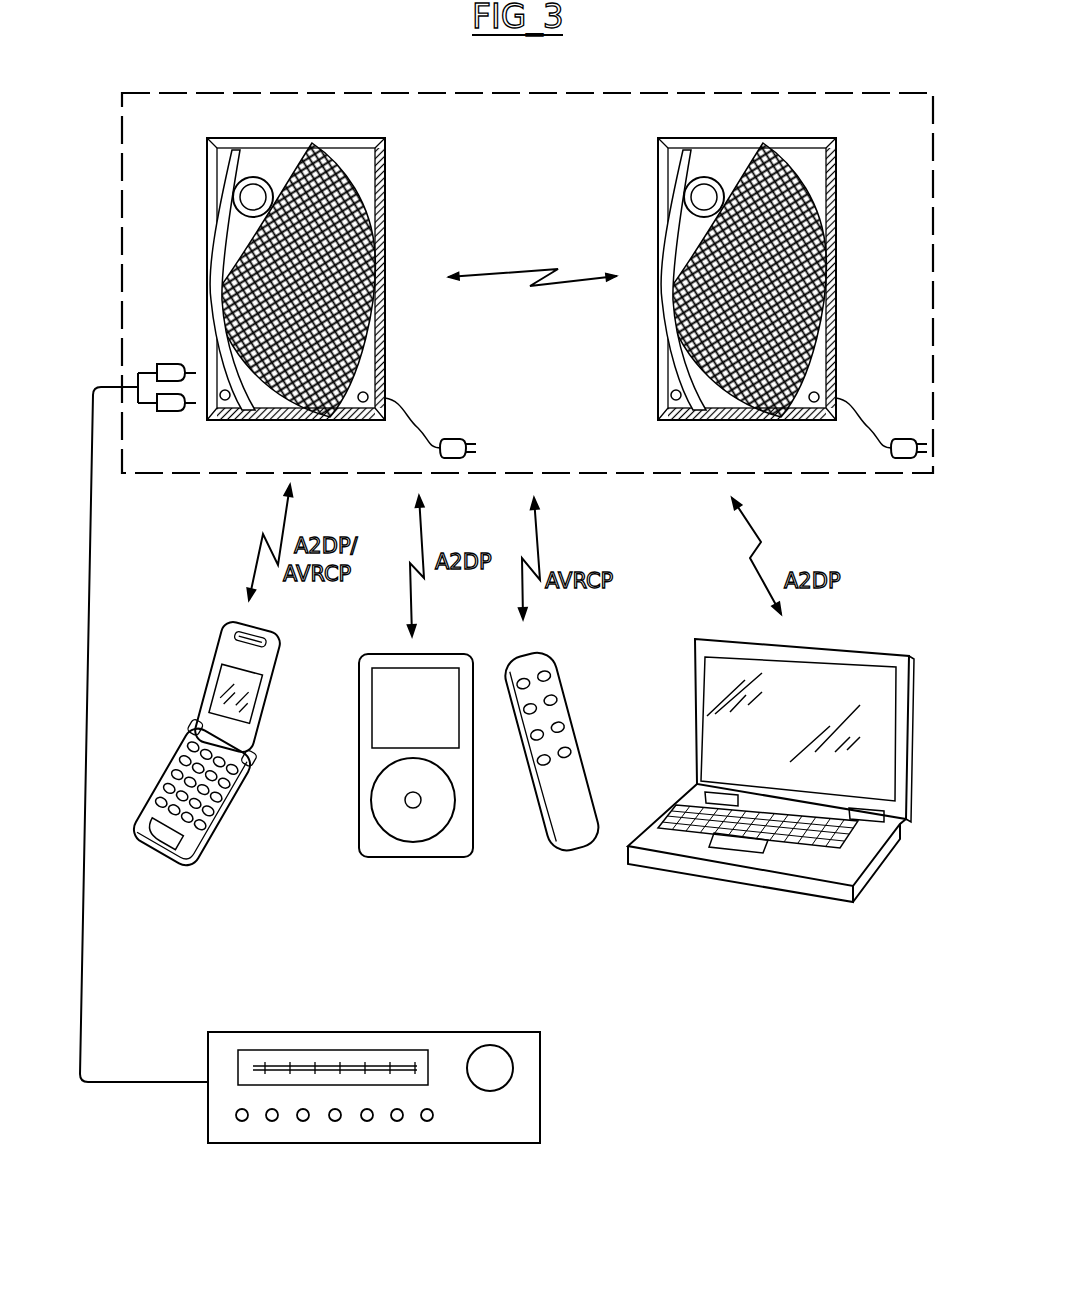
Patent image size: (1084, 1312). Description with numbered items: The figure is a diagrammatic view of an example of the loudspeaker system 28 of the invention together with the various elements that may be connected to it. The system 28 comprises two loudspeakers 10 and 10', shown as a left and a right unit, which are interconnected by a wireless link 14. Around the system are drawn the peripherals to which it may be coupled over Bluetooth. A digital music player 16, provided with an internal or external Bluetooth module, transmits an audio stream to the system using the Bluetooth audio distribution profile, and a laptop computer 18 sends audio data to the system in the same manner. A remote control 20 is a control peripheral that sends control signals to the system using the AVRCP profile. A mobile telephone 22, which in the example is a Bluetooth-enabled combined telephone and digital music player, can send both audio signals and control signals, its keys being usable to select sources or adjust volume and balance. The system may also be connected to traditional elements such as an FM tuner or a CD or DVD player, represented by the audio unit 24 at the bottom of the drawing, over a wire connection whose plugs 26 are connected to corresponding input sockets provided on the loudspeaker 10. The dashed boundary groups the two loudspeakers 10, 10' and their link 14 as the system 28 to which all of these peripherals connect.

The loudspeaker 10 is at (341, 249).
The loudspeaker 10' is at (792, 249).
The wireless link 14 is at (505, 278).
The digital music player 16 is at (428, 857).
The laptop computer 18 is at (875, 860).
The remote control 20 is at (576, 842).
The mobile phone 22 is at (227, 829).
The audio receiver 24 is at (355, 1143).
The plugs 26 is at (158, 347).
The speaker system 28 is at (610, 474).